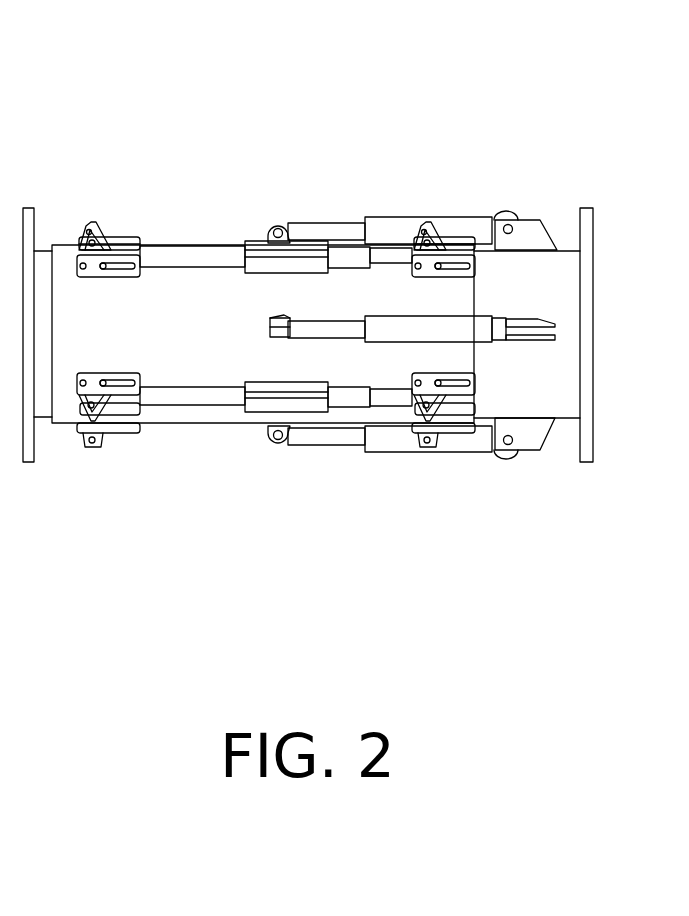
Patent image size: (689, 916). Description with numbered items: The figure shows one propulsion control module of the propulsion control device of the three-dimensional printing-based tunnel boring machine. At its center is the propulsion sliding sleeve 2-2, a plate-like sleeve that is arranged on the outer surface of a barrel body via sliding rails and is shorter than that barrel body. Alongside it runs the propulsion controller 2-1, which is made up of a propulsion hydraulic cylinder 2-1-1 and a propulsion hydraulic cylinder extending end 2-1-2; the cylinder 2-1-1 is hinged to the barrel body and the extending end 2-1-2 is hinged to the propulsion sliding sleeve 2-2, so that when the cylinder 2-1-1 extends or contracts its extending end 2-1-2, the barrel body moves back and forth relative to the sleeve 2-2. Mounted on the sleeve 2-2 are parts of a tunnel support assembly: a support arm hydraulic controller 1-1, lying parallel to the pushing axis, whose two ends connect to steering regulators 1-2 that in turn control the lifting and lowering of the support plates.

The support arm hydraulic controller 1-1 is at (455, 342).
The steering regulator 1-2 is at (99, 208).
The propulsion controller 2-1 is at (385, 452).
The propulsion hydraulic cylinder 2-1-1 is at (460, 204).
The propulsion hydraulic cylinder extending end 2-1-2 is at (327, 210).
The propulsion sliding sleeve 2-2 is at (182, 323).